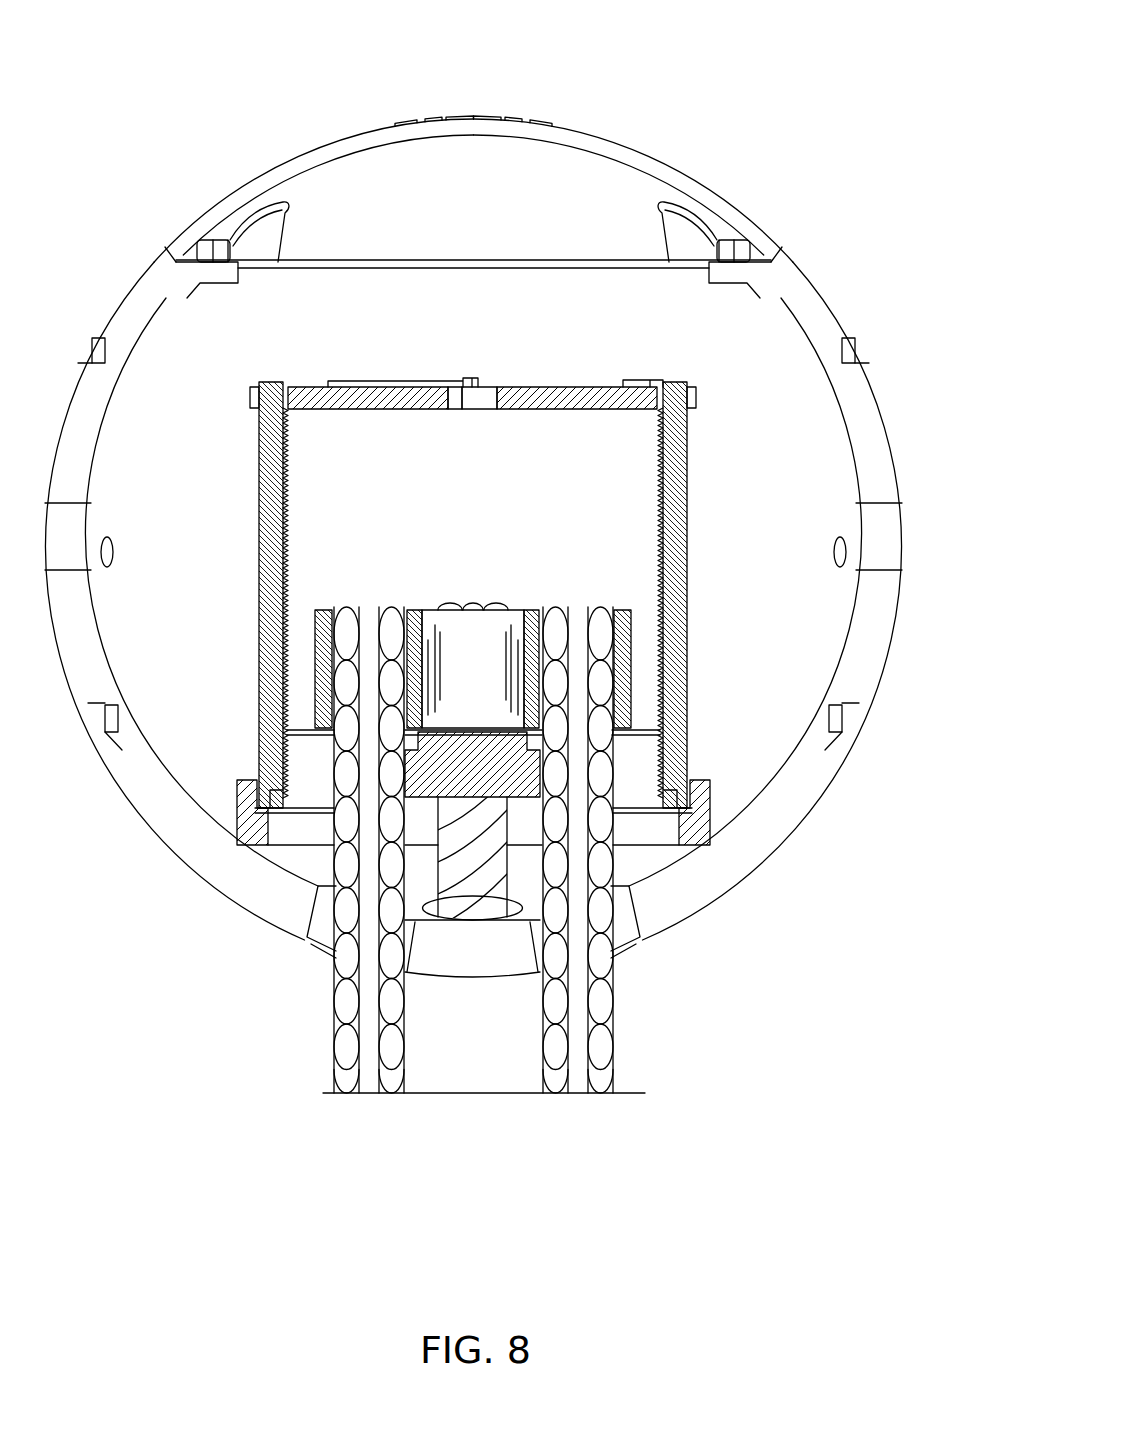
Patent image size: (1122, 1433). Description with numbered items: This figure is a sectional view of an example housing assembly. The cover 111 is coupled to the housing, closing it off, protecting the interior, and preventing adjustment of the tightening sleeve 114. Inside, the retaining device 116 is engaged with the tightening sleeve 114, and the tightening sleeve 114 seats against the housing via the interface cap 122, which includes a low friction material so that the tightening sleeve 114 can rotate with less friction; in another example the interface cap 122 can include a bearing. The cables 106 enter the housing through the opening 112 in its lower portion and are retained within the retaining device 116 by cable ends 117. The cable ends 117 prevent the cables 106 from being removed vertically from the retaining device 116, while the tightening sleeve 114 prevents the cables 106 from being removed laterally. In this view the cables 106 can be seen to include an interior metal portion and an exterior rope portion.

The cover 111 is at (622, 153).
The tightening sleeve 114 is at (690, 447).
The cable ends 117 is at (413, 608).
The retaining device 116 is at (635, 760).
The interface cap 122 is at (518, 798).
The opening 112 is at (316, 953).
The cables 106 is at (545, 1126).